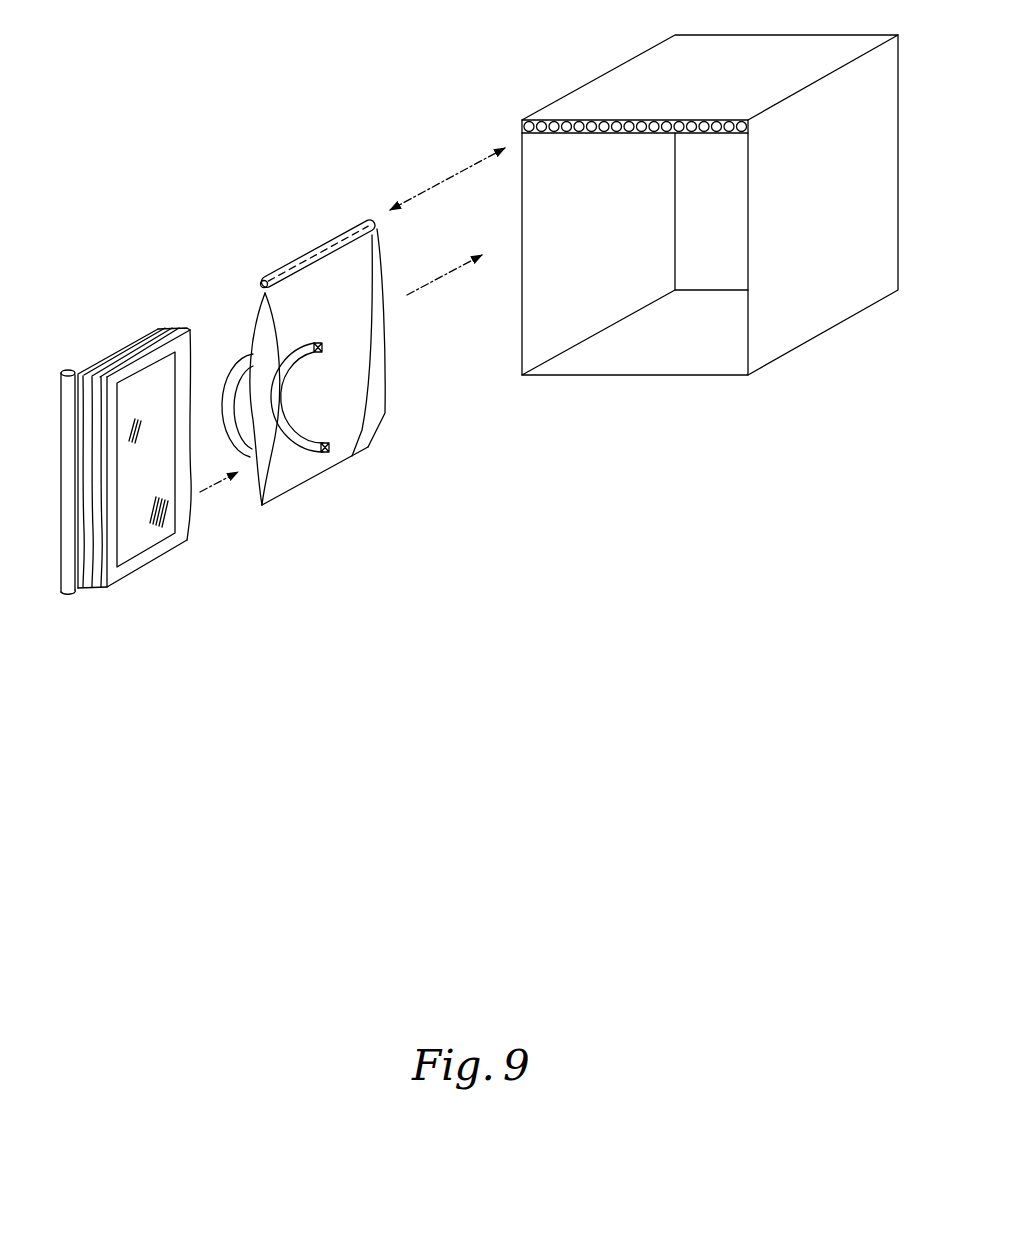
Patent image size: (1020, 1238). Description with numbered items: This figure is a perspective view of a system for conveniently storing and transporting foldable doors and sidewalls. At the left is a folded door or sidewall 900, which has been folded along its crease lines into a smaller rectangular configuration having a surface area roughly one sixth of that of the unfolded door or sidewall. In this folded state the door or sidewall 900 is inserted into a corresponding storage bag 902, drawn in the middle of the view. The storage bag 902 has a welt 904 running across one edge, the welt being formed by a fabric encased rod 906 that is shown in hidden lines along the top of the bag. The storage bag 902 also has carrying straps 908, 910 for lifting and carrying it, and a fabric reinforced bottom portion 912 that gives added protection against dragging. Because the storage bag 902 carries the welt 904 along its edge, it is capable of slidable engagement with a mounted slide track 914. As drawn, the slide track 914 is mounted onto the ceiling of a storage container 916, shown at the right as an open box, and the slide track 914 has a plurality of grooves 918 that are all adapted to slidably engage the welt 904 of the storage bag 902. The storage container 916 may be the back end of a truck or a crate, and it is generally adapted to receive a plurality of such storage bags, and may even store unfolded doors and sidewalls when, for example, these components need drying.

The folded door or sidewall 900 is at (173, 603).
The storage bag 902 is at (320, 394).
The welt 904 is at (273, 272).
The fabric encased rod 906 is at (310, 257).
The carrying strap 908 is at (298, 474).
The carrying strap 910 is at (232, 387).
The fabric reinforced bottom portion 912 is at (372, 410).
The slide track 914 is at (578, 137).
The storage container 916 is at (653, 293).
The grooves 918 is at (547, 136).